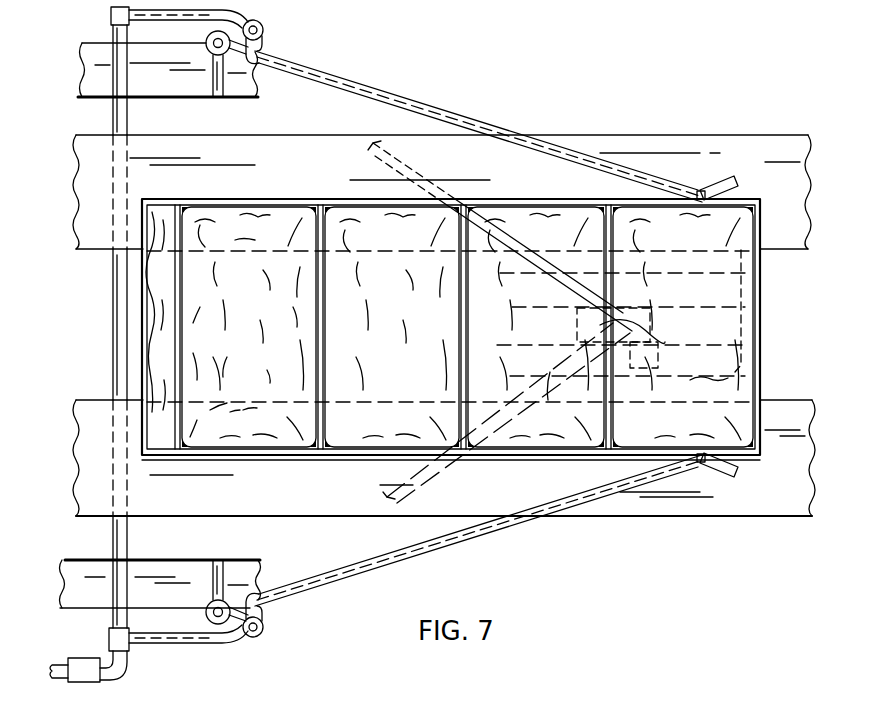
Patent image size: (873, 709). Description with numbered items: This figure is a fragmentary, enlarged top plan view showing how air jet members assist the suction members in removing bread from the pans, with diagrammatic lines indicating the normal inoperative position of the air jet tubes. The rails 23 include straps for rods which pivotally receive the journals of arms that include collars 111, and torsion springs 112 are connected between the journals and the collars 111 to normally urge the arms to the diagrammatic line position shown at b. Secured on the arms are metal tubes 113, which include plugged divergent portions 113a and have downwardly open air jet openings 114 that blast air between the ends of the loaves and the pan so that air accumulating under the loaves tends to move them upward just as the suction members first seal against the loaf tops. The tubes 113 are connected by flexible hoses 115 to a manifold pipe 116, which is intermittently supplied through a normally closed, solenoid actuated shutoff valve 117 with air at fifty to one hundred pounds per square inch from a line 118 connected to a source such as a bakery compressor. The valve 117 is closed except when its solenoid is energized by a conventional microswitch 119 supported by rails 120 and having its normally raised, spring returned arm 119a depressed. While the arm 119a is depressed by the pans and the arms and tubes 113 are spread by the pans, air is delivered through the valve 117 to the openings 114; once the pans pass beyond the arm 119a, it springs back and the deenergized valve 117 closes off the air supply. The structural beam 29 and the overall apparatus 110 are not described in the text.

The rails 23 is at (80, 598).
The frame beam 29 is at (795, 250).
The spray apparatus supply pipe 110 is at (285, 708).
The collars 111 is at (205, 617).
The torsion springs 112 is at (250, 708).
The metal tubes 113 is at (515, 440).
The plugged divergent portions 113a is at (722, 480).
The air jet openings 114 is at (700, 460).
The flexible hoses 115 is at (258, 20).
The manifold pipe 116 is at (125, 655).
The shutoff valve 117 is at (84, 672).
The line 118 is at (56, 677).
The microswitch 119 is at (565, 325).
The arm 119a is at (760, 354).
The rails 120 is at (664, 278).
The diagrammatic line position b is at (412, 167).